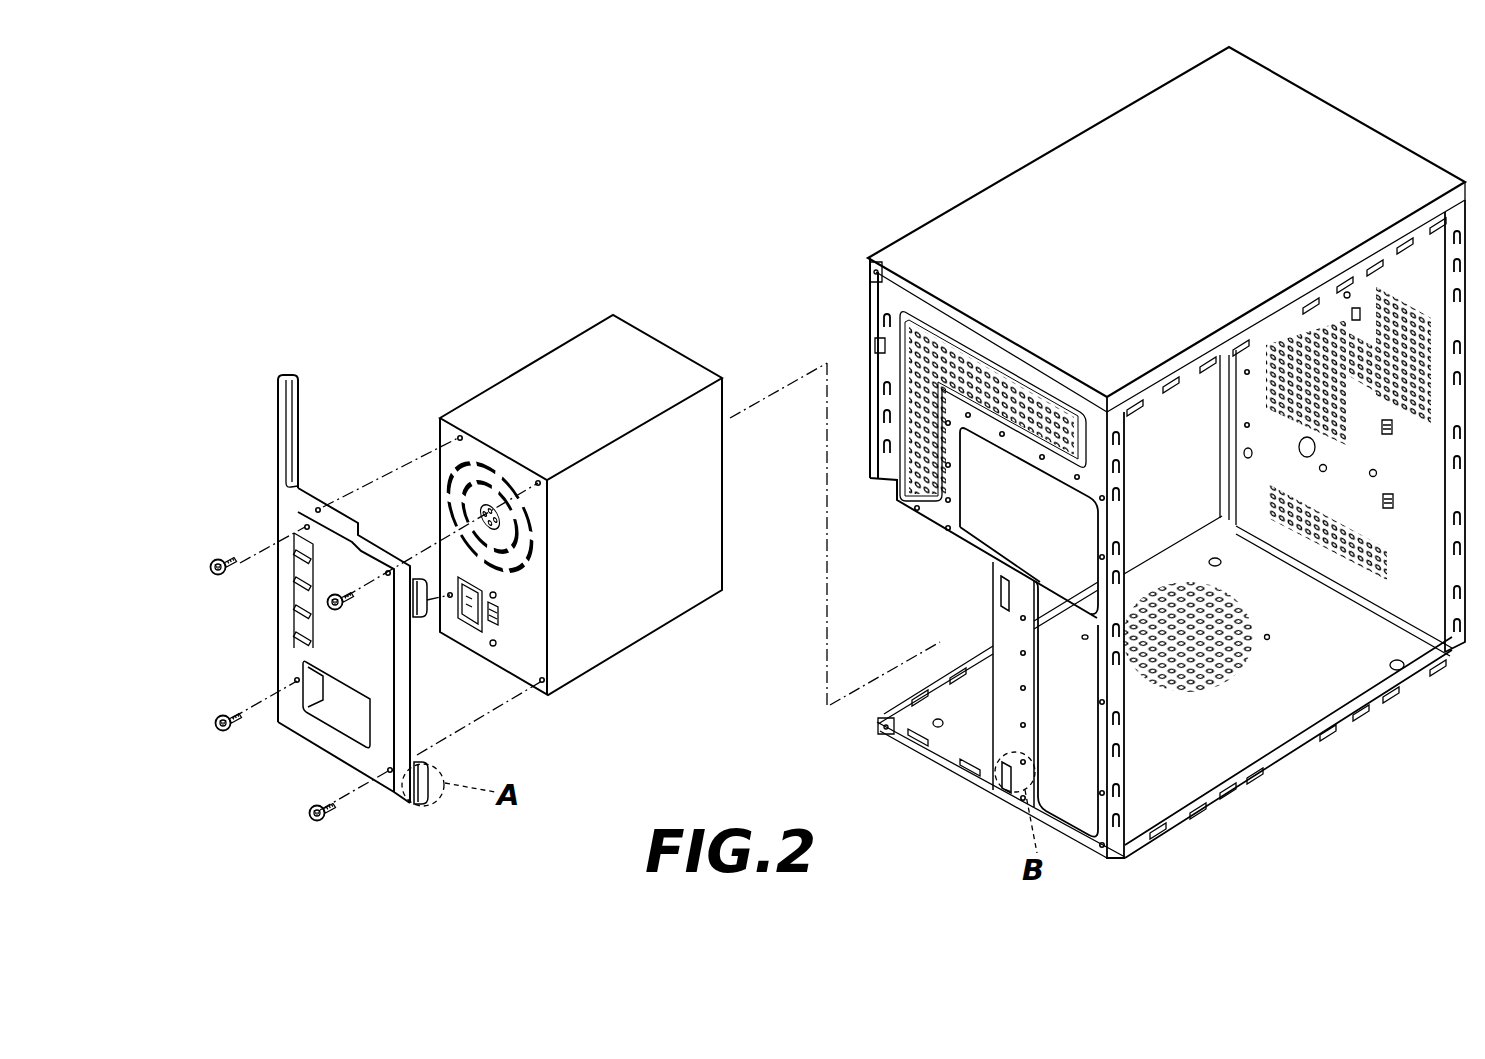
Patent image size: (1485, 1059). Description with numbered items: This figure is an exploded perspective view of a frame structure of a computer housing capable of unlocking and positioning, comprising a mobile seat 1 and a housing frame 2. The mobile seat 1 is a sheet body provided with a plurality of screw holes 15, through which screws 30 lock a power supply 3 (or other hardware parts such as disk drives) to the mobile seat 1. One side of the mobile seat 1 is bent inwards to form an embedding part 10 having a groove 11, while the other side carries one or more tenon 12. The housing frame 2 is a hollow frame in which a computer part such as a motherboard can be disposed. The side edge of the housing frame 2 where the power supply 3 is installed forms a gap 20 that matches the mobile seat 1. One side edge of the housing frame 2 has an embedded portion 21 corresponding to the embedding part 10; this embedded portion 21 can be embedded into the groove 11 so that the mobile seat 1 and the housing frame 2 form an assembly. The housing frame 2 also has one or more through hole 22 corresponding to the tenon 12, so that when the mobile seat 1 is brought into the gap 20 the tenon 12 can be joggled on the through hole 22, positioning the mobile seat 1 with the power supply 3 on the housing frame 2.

The mobile seat 1 is at (248, 652).
The embedding part 10 is at (278, 415).
The groove 11 is at (287, 373).
The tenon 12 is at (425, 792).
The screw holes 15 is at (315, 510).
The screws 30 is at (232, 560).
The power supply 3 is at (598, 650).
The housing frame 2 is at (1324, 779).
The gap 20 is at (905, 608).
The embedded portion 21 is at (887, 494).
The through hole 22 is at (1002, 787).